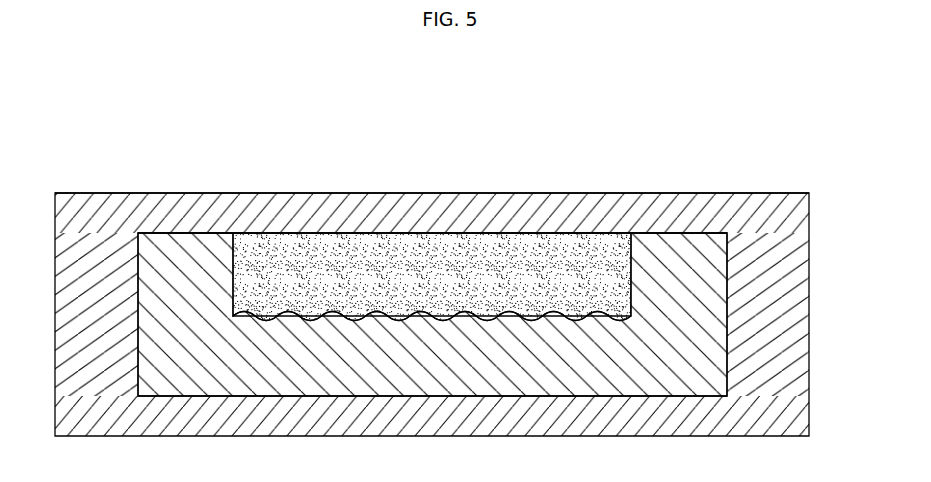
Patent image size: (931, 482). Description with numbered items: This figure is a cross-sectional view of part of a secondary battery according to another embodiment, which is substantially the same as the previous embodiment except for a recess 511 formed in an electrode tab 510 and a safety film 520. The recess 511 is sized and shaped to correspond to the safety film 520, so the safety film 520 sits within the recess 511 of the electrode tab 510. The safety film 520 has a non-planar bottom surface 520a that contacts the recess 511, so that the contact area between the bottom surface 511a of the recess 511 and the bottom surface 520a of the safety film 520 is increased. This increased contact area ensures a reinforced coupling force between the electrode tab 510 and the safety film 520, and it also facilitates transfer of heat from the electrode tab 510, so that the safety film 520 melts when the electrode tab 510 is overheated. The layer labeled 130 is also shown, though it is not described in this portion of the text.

The electrode tab 510 is at (661, 252).
The recess 511 is at (233, 277).
The bottom surface of recess 511a is at (562, 315).
The safety film 520 is at (306, 250).
The bottom surface of safety film 520a is at (413, 315).
The cover layer 130 is at (459, 201).